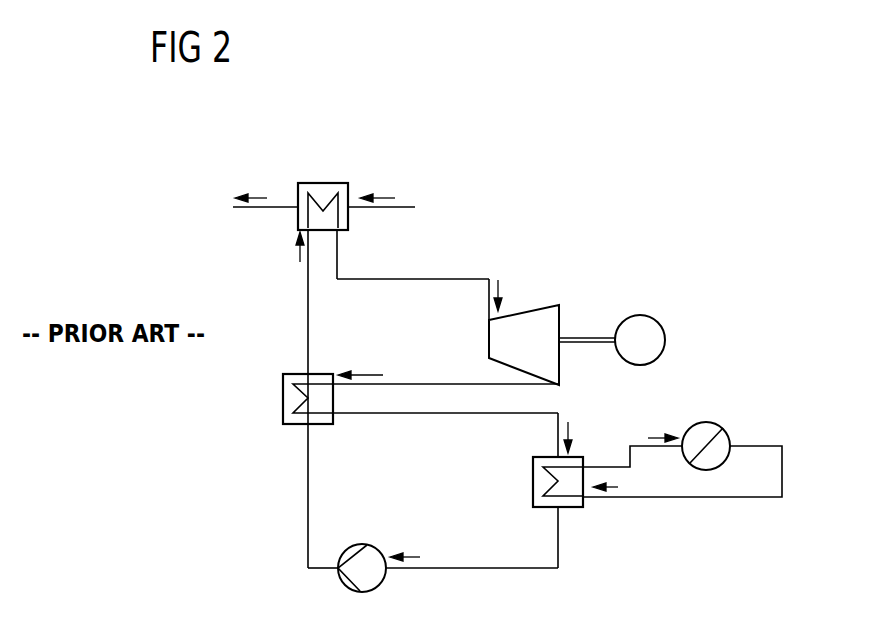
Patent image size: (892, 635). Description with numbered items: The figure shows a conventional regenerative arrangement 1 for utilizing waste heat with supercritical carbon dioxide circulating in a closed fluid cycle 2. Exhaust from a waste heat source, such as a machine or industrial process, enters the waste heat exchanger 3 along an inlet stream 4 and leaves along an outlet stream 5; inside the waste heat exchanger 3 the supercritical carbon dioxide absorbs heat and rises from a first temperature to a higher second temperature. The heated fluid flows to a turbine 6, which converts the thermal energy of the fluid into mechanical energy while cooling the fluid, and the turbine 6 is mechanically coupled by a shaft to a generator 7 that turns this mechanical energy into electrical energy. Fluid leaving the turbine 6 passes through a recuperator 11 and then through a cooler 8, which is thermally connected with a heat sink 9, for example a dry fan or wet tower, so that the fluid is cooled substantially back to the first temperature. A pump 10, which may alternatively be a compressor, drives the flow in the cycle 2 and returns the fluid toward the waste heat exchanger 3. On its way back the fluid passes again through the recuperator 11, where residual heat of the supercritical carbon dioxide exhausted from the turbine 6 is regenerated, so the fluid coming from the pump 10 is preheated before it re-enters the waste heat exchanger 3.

The regenerative arrangement 1 is at (630, 212).
The fluid cycle 2 is at (276, 507).
The waste heat exchanger 3 is at (342, 183).
The hot flue gas inflow 4 is at (405, 206).
The flue gas outflow 5 is at (277, 206).
The turbine 6 is at (535, 305).
The generator 7 is at (636, 316).
The cooler 8 is at (533, 483).
The heat sink 9 is at (705, 422).
The pump 10 is at (368, 544).
The recuperator 11 is at (283, 398).